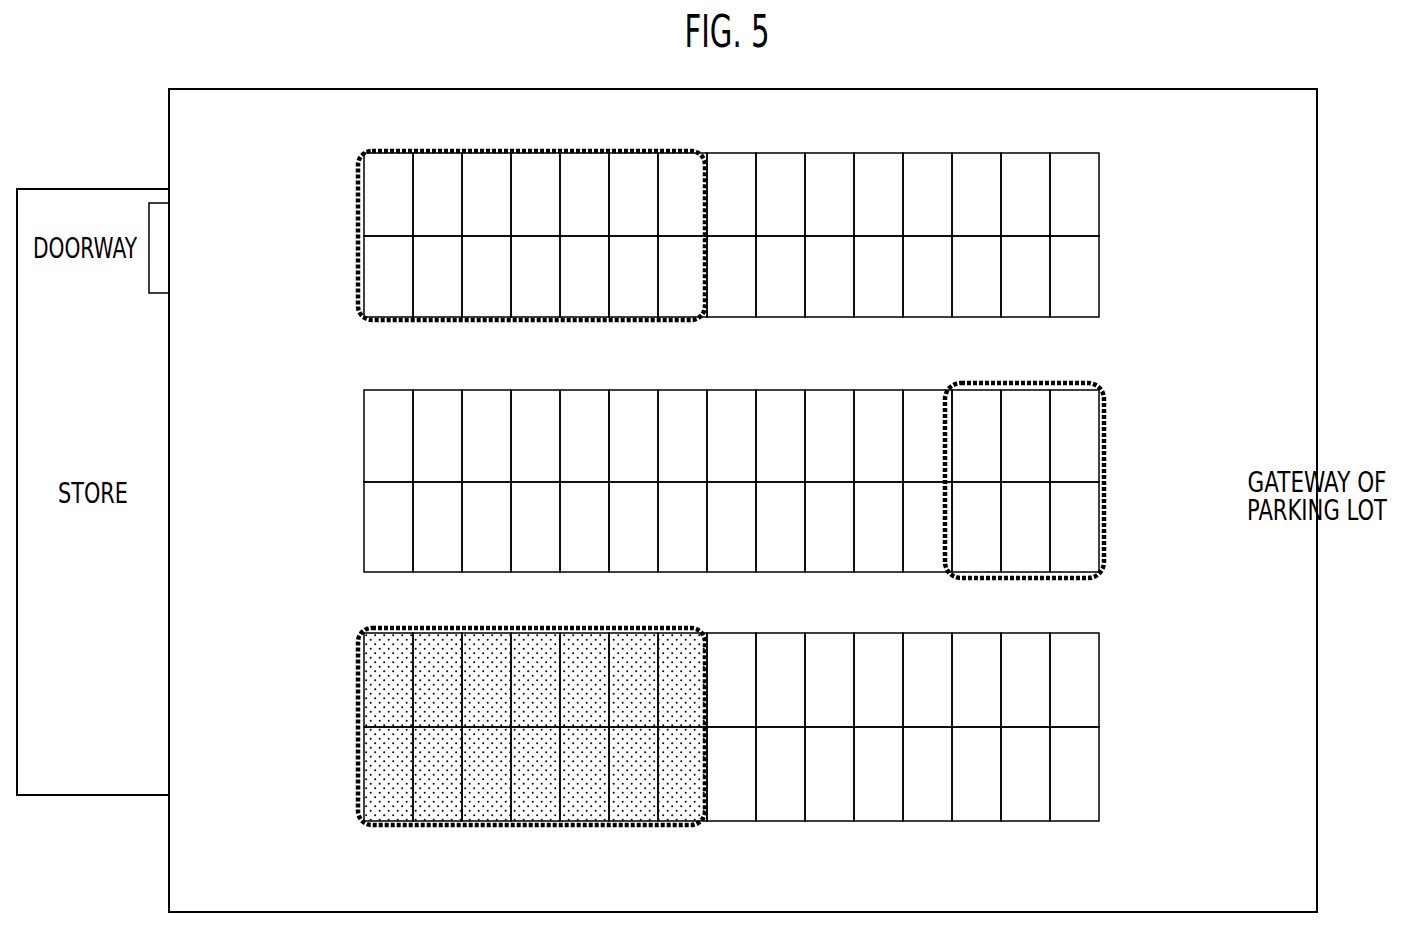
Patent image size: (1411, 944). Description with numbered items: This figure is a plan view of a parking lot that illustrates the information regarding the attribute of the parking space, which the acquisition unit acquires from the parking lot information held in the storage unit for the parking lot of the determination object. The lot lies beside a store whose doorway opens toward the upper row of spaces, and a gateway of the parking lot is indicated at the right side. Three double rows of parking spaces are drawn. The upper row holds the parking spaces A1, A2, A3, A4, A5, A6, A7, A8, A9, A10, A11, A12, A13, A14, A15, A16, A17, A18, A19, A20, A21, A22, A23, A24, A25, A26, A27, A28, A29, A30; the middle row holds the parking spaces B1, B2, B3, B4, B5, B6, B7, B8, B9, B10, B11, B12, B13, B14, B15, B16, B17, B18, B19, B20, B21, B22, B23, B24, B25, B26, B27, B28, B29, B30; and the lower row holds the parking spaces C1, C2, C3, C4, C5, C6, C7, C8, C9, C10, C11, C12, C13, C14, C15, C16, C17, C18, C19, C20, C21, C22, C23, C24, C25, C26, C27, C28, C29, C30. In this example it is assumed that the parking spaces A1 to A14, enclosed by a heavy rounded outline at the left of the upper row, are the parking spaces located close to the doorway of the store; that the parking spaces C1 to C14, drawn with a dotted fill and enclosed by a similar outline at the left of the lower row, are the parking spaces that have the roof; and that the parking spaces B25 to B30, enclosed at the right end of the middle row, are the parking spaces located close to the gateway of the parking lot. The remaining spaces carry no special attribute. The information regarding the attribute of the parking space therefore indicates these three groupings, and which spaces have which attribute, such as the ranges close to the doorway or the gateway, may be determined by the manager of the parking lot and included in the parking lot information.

The parking space A1 is at (388, 194).
The parking space A2 is at (388, 276).
The parking space A3 is at (437, 194).
The parking space A4 is at (437, 276).
The parking space A5 is at (486, 194).
The parking space A6 is at (486, 276).
The parking space A7 is at (535, 194).
The parking space A8 is at (535, 276).
The parking space A9 is at (584, 194).
The parking space A10 is at (584, 276).
The parking space A11 is at (633, 194).
The parking space A12 is at (633, 276).
The parking space A13 is at (682, 194).
The parking space A14 is at (682, 276).
The parking space A15 is at (731, 194).
The parking space A16 is at (731, 276).
The parking space A17 is at (780, 194).
The parking space A18 is at (780, 276).
The parking space A19 is at (829, 194).
The parking space A20 is at (829, 276).
The parking space A21 is at (878, 194).
The parking space A22 is at (878, 276).
The parking space A23 is at (927, 194).
The parking space A24 is at (927, 276).
The parking space A25 is at (976, 194).
The parking space A26 is at (976, 276).
The parking space A27 is at (1025, 194).
The parking space A28 is at (1025, 276).
The parking space A29 is at (1074, 194).
The parking space A30 is at (1074, 276).
The parking space B1 is at (388, 436).
The parking space B2 is at (388, 527).
The parking space B3 is at (437, 436).
The parking space B4 is at (437, 527).
The parking space B5 is at (486, 436).
The parking space B6 is at (486, 527).
The parking space B7 is at (535, 436).
The parking space B8 is at (535, 527).
The parking space B9 is at (584, 436).
The parking space B10 is at (584, 527).
The parking space B11 is at (633, 436).
The parking space B12 is at (633, 527).
The parking space B13 is at (682, 436).
The parking space B14 is at (682, 527).
The parking space B15 is at (731, 436).
The parking space B16 is at (731, 527).
The parking space B17 is at (780, 436).
The parking space B18 is at (780, 527).
The parking space B19 is at (829, 436).
The parking space B20 is at (829, 527).
The parking space B21 is at (878, 436).
The parking space B22 is at (878, 527).
The parking space B23 is at (927, 436).
The parking space B24 is at (927, 527).
The parking space B25 is at (976, 436).
The parking space B26 is at (976, 527).
The parking space B27 is at (1025, 436).
The parking space B28 is at (1025, 527).
The parking space B29 is at (1074, 436).
The parking space B30 is at (1074, 527).
The parking space C1 is at (388, 680).
The parking space C2 is at (388, 774).
The parking space C3 is at (437, 680).
The parking space C4 is at (437, 774).
The parking space C5 is at (486, 680).
The parking space C6 is at (486, 774).
The parking space C7 is at (535, 680).
The parking space C8 is at (535, 774).
The parking space C9 is at (584, 680).
The parking space C10 is at (584, 774).
The parking space C11 is at (633, 680).
The parking space C12 is at (633, 774).
The parking space C13 is at (682, 680).
The parking space C14 is at (682, 774).
The parking space C15 is at (731, 680).
The parking space C16 is at (731, 774).
The parking space C17 is at (780, 680).
The parking space C18 is at (780, 774).
The parking space C19 is at (829, 680).
The parking space C20 is at (829, 774).
The parking space C21 is at (878, 680).
The parking space C22 is at (878, 774).
The parking space C23 is at (927, 680).
The parking space C24 is at (927, 774).
The parking space C25 is at (976, 680).
The parking space C26 is at (976, 774).
The parking space C27 is at (1025, 680).
The parking space C28 is at (1025, 774).
The parking space C29 is at (1074, 680).
The parking space C30 is at (1074, 774).